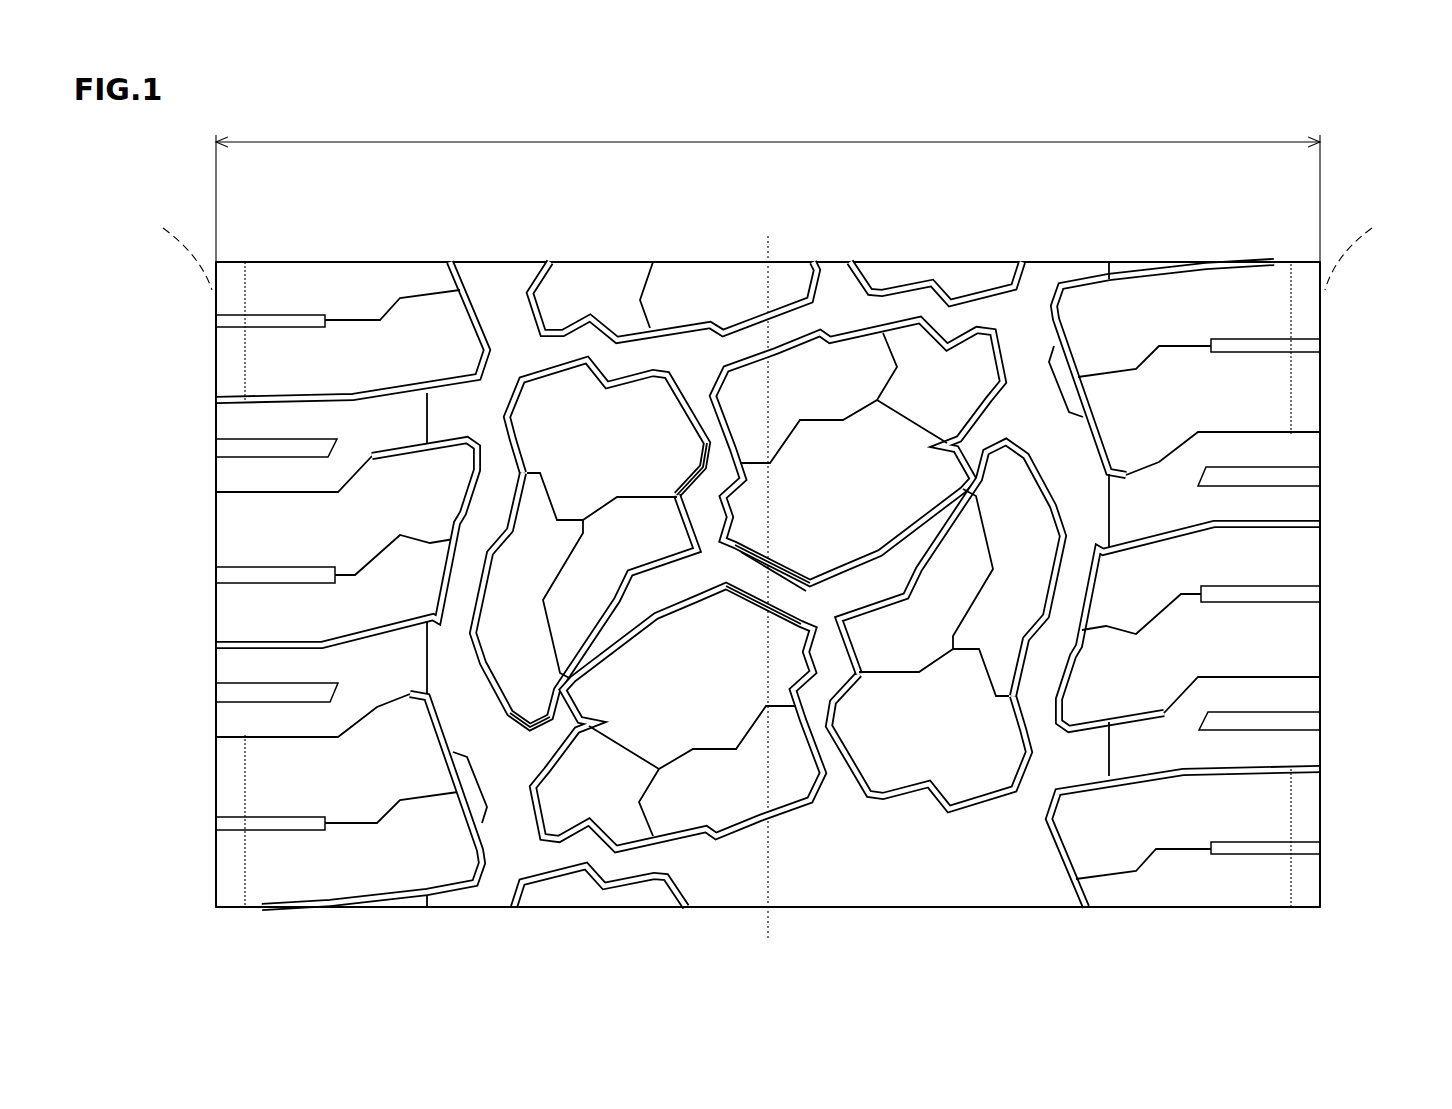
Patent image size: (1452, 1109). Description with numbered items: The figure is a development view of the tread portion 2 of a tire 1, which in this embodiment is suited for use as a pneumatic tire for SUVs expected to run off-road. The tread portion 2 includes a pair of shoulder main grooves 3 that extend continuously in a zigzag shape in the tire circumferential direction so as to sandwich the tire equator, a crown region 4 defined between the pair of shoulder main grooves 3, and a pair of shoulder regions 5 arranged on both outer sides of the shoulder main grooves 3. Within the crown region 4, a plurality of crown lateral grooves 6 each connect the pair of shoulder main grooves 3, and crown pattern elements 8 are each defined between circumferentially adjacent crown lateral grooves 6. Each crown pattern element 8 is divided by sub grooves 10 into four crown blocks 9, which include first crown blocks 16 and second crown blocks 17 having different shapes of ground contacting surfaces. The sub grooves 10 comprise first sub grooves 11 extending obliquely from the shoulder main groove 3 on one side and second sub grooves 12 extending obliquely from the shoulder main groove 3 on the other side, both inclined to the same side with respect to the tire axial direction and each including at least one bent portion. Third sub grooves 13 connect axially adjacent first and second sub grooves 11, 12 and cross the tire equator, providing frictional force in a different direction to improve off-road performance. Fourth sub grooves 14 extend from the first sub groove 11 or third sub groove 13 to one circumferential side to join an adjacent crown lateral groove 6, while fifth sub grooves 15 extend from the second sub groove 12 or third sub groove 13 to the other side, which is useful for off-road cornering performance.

The tire 1 is at (1108, 248).
The tread portion 2 is at (570, 248).
The shoulder main grooves 3 is at (505, 303).
The crown region 4 is at (700, 303).
The shoulder regions 5 is at (350, 293).
The crown lateral grooves 6 is at (918, 303).
The crown pattern elements 8 is at (553, 428).
The crown blocks 9 is at (768, 658).
The sub grooves 10 is at (751, 580).
The first sub grooves 11 is at (546, 732).
The second sub grooves 12 is at (882, 487).
The third sub grooves 13 is at (781, 585).
The fourth sub grooves 14 is at (723, 462).
The fifth sub grooves 15 is at (835, 692).
The first crown blocks 16 is at (523, 570).
The second crown blocks 17 is at (646, 700).